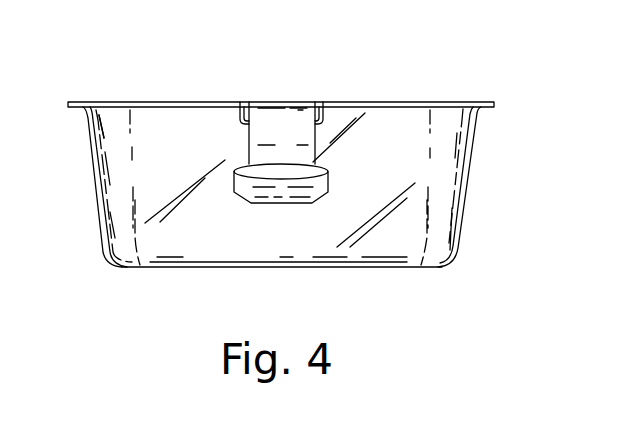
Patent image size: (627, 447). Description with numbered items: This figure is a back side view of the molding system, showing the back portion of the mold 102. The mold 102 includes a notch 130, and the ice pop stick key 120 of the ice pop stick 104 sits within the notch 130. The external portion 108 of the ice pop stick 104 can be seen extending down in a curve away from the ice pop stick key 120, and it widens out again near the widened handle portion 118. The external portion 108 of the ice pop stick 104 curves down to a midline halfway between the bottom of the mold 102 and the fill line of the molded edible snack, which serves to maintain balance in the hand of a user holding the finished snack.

The mold 102 is at (442, 232).
The ice pop stick 104 is at (300, 154).
The external portion 108 is at (232, 148).
The widened handle portion 118 is at (282, 178).
The ice pop stick key 120 is at (290, 110).
The notch 130 is at (323, 112).